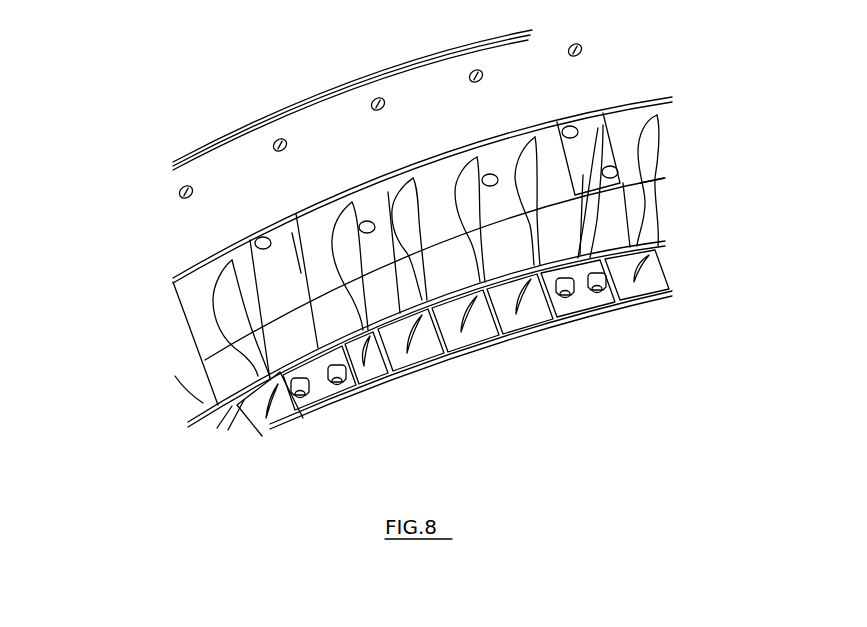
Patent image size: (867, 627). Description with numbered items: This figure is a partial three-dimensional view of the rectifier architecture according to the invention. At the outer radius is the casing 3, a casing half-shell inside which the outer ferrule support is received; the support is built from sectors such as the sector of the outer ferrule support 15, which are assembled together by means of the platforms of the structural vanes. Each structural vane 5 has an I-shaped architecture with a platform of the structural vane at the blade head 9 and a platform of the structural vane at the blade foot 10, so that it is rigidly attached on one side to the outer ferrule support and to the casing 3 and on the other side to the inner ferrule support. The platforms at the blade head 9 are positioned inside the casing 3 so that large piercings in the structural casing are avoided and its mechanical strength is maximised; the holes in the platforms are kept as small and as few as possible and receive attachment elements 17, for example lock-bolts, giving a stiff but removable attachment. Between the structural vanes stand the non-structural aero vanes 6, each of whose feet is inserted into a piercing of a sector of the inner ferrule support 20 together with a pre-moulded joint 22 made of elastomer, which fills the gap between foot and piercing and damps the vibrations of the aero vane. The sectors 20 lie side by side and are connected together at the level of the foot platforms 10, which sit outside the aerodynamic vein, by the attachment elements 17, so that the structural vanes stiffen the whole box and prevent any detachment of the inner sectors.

The casing 3 is at (247, 177).
The structural vane 5 is at (297, 280).
The aero vane 6 is at (665, 196).
The platform of the structural vane at the blade head 9 is at (594, 140).
The platform of the structural vane at the blade foot 10 is at (578, 297).
The sector of the outer ferrule support 15 is at (385, 193).
The attachment elements 17 is at (492, 174).
The sector of the inner ferrule support 20 is at (660, 252).
The pre-moulded joint 22 is at (387, 365).